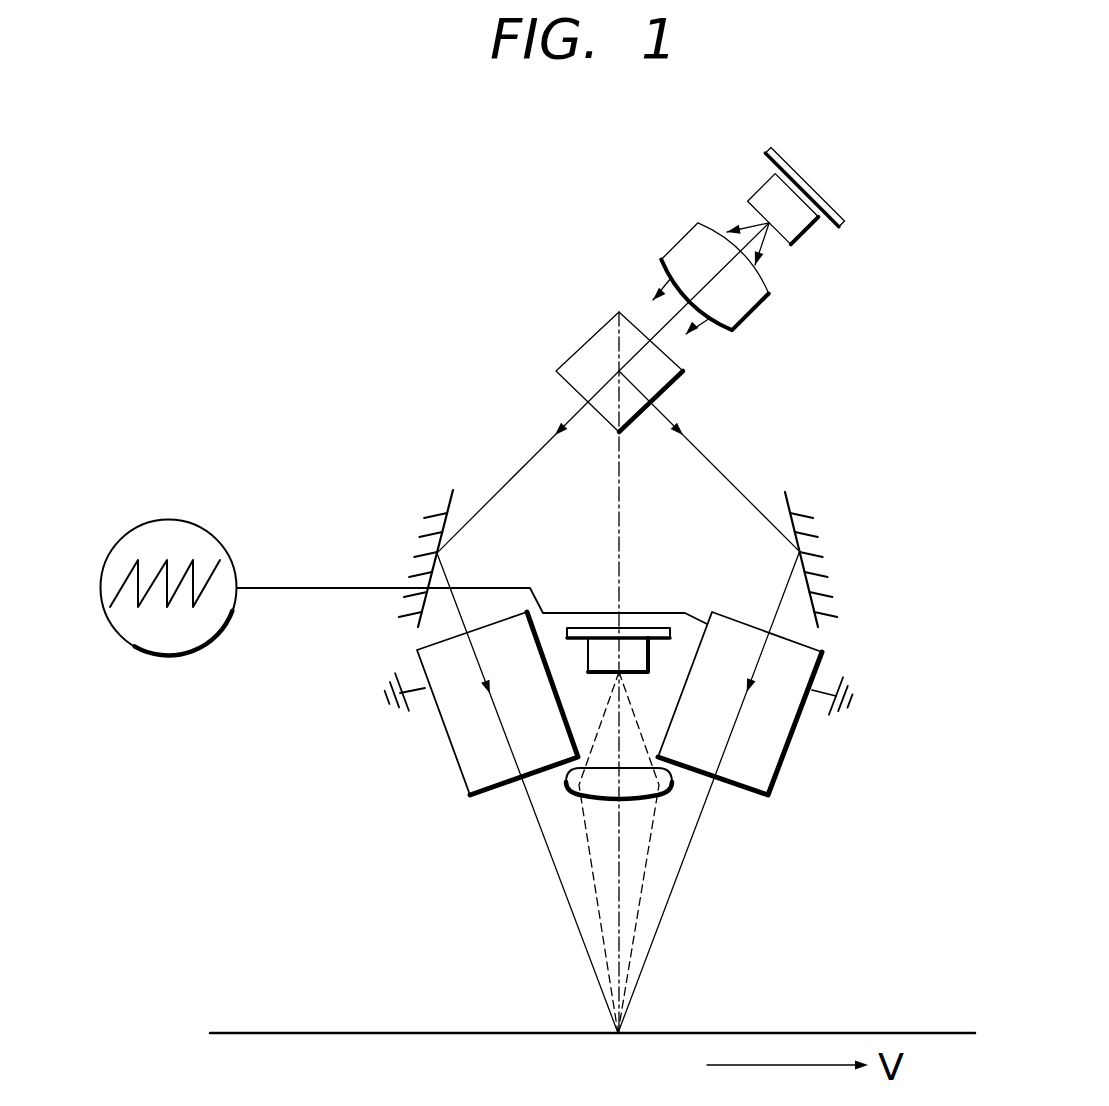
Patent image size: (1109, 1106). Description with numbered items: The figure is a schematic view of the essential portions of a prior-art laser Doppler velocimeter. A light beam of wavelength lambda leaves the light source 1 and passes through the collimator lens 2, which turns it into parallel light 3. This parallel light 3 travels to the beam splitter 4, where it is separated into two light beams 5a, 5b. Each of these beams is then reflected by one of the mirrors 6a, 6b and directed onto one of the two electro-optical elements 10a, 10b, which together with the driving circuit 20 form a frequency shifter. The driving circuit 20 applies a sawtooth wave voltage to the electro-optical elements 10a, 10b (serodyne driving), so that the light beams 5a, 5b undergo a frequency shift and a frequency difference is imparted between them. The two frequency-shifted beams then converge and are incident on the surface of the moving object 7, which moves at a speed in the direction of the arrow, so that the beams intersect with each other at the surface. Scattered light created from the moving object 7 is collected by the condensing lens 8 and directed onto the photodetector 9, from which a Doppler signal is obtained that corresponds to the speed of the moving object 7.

The light source 1 is at (762, 192).
The collimator lens 2 is at (680, 240).
The parallel light 3 is at (663, 287).
The beam splitter 4 is at (584, 346).
The light beam 5a is at (513, 470).
The light beam 5b is at (723, 468).
The mirror 6a is at (450, 494).
The mirror 6b is at (787, 496).
The moving object 7 is at (355, 1032).
The condensing lens 8 is at (635, 790).
The photodetector 9 is at (637, 668).
The electro-optical element 10a is at (465, 749).
The electro-optical element 10b is at (777, 735).
The driving circuit 20 is at (187, 520).